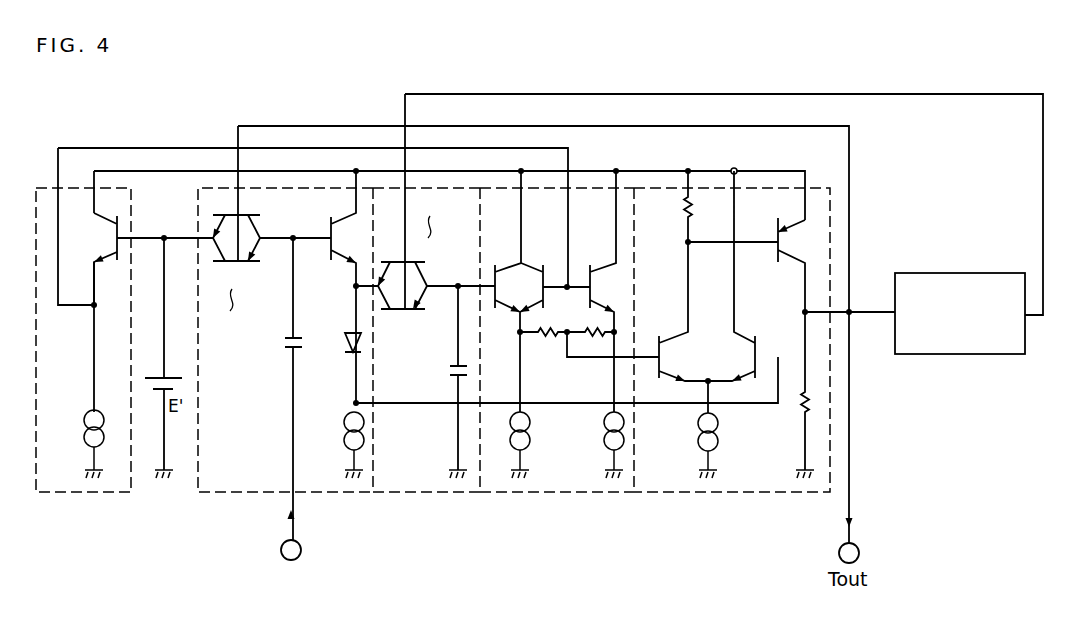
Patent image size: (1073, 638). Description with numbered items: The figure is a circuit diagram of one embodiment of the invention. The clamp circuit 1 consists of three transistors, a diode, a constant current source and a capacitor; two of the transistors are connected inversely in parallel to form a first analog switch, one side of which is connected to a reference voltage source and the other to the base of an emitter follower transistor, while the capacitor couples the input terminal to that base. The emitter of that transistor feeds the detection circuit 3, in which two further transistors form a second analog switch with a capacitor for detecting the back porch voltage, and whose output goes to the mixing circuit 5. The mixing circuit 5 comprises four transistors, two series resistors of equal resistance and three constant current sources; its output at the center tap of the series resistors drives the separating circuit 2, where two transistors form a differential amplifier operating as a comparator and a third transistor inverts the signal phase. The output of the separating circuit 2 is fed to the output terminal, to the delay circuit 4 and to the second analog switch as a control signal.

The clamp circuit 1 is at (203, 490).
The separating circuit 2 is at (740, 494).
The detection circuit 3 is at (465, 492).
The delay circuit 4 is at (925, 273).
The mixing circuit 5 is at (69, 490).